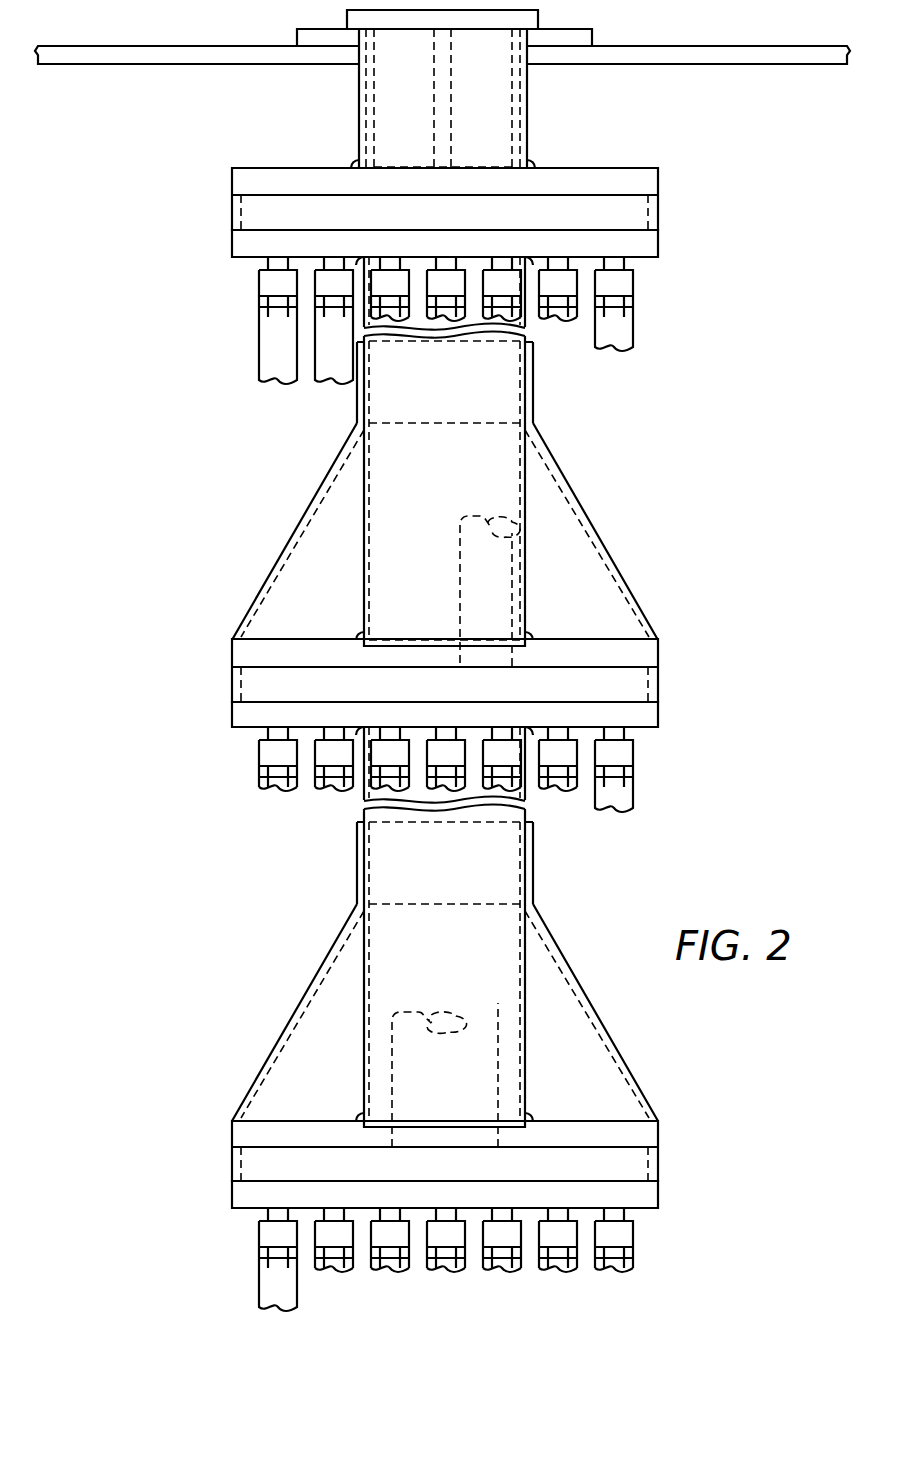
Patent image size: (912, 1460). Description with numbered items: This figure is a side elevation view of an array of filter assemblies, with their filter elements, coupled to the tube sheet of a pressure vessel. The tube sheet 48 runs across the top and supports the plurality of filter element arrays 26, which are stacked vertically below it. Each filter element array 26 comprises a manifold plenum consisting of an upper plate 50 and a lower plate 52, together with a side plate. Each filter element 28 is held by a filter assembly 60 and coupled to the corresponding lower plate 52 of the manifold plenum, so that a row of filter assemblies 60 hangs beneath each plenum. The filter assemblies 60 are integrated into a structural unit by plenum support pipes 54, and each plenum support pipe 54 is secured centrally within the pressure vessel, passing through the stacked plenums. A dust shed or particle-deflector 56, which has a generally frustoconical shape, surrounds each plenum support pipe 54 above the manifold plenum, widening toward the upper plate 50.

The filter element array 26 is at (155, 301).
The filter element 28 is at (262, 345).
The tube sheet 48 is at (642, 46).
The upper plate 50 is at (235, 183).
The lower plate 52 is at (240, 246).
The plenum support pipe 54 is at (531, 372).
The dust shed or particle-deflector 56 is at (300, 524).
The filter assembly 60 is at (258, 285).